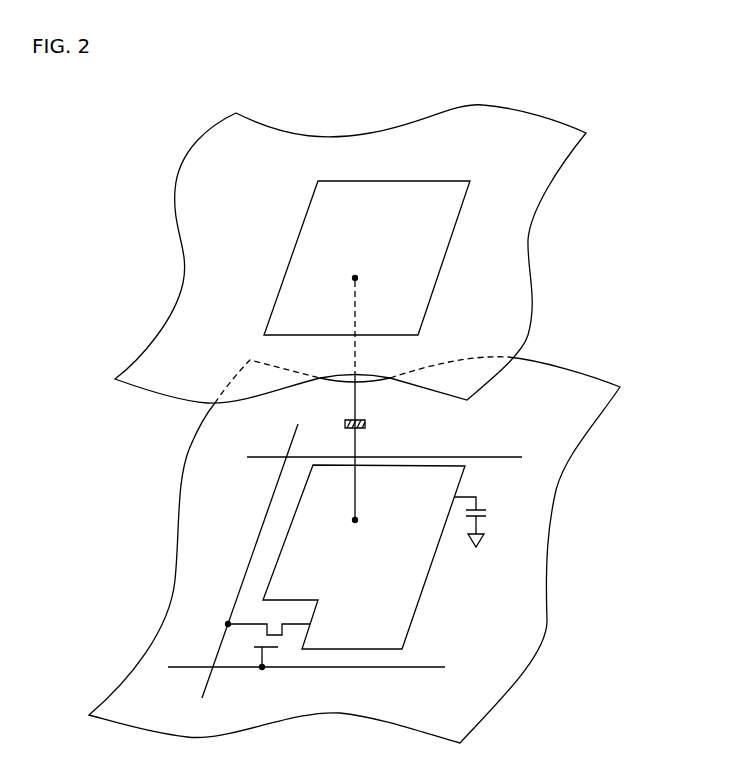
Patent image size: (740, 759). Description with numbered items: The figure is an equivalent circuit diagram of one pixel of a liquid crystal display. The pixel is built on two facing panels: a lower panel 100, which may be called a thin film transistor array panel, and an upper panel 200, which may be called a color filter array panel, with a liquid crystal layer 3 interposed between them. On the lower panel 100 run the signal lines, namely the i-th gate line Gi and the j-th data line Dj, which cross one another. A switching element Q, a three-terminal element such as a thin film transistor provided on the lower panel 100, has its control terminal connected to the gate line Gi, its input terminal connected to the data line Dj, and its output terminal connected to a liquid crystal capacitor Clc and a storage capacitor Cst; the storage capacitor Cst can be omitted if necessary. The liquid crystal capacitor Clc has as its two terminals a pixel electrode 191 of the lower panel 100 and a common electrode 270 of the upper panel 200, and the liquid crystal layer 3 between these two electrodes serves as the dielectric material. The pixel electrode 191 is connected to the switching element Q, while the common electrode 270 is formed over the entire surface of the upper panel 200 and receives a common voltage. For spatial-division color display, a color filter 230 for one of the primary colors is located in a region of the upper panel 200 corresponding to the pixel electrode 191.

The upper panel 200 is at (370, 254).
The common electrode 270 is at (529, 235).
The color filter 230 is at (442, 270).
The lower panel 100 is at (566, 532).
The pixel electrode 191 is at (420, 600).
The liquid crystal capacitor Clc is at (373, 425).
The storage capacitor Cst is at (485, 522).
The data line Dj is at (272, 497).
The gate line Gi is at (180, 668).
The switching element Q is at (268, 646).
The liquid crystal layer 3 is at (100, 465).